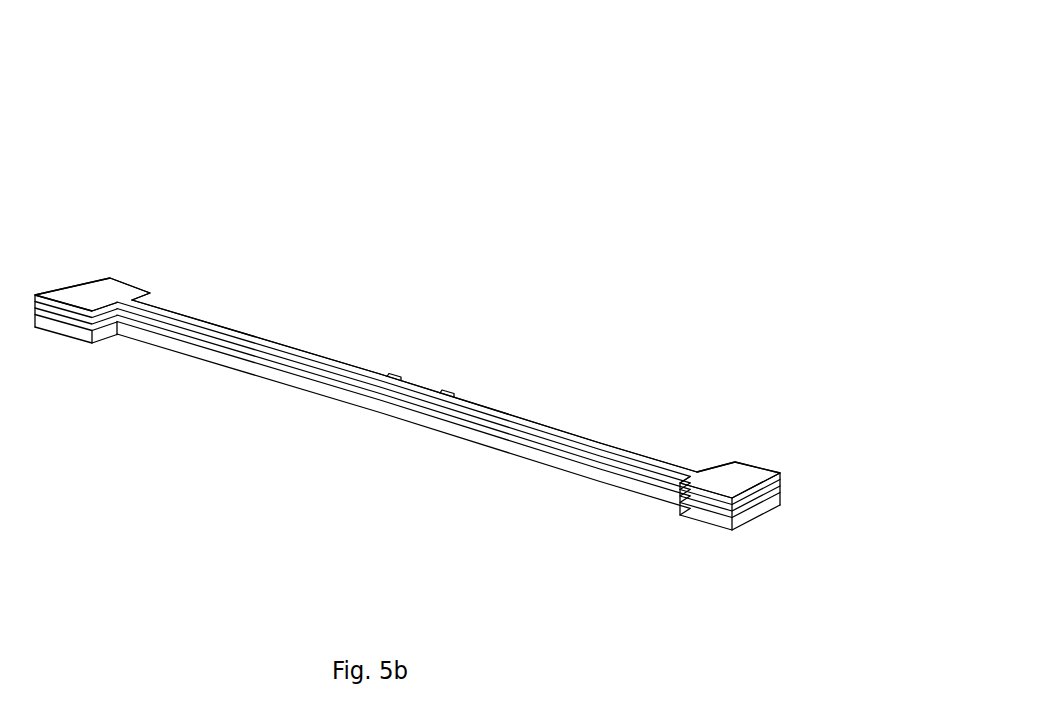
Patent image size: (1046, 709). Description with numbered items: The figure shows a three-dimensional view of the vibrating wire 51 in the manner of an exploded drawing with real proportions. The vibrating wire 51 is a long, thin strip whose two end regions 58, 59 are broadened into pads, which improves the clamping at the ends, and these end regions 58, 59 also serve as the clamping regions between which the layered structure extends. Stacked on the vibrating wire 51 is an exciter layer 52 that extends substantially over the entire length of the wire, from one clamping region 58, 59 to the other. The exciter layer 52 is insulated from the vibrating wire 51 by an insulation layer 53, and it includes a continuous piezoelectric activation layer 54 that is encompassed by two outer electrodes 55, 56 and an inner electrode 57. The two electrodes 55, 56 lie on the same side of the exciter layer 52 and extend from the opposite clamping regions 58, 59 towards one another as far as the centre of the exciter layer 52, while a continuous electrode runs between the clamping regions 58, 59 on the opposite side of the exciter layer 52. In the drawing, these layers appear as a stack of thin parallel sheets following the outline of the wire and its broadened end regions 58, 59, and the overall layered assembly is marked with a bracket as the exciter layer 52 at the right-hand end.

The vibrating wire 51 is at (410, 416).
The exciter layer 52 is at (603, 147).
The insulation layer 53 is at (242, 362).
The piezoelectric activation layer 54 is at (420, 336).
The outer electrode 55 is at (196, 322).
The outer electrode 56 is at (611, 440).
The inner electrode 57 is at (583, 453).
The end region 58 is at (83, 378).
The end region 59 is at (727, 408).